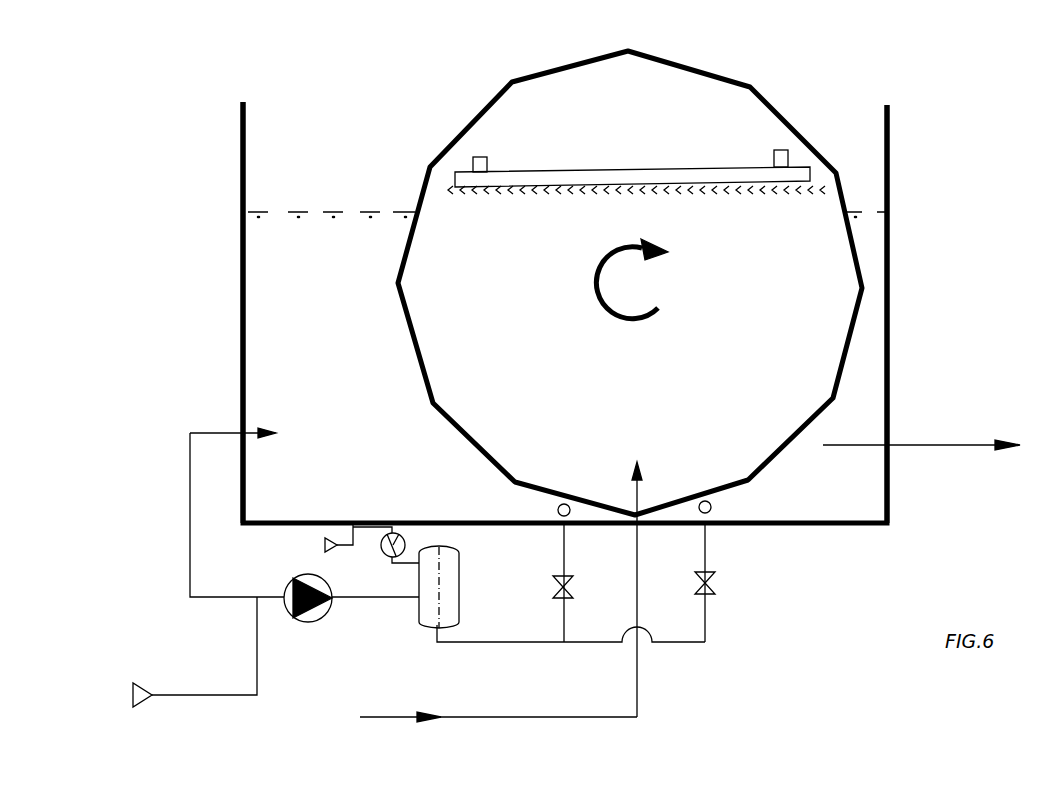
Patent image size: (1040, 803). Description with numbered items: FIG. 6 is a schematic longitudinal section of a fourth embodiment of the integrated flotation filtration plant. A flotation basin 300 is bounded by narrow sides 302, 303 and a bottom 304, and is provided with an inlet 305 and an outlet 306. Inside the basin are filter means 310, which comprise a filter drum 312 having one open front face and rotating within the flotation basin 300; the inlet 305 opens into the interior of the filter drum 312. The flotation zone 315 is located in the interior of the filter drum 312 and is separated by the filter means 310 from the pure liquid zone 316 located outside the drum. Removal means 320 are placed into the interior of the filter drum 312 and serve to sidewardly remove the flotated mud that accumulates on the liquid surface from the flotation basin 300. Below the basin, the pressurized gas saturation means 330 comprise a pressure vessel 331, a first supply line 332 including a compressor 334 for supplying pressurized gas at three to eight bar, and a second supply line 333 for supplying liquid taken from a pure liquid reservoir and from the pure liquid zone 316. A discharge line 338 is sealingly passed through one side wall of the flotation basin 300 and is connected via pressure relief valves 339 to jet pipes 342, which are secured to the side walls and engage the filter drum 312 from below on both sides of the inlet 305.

The flotation basin 300 is at (352, 143).
The narrow side 302 is at (242, 260).
The narrow side 303 is at (887, 150).
The bottom 304 is at (352, 522).
The inlet 305 is at (638, 685).
The outlet 306 is at (962, 443).
The filter means 310 is at (630, 258).
The filter drum 312 is at (785, 113).
The flotation zone 315 is at (569, 301).
The pure liquid zone 316 is at (567, 270).
The removal means 320 is at (572, 172).
The pressurized gas saturation means 330 is at (456, 567).
The pressure vessel 331 is at (455, 568).
The first supply line 332 is at (323, 538).
The second supply line 333 is at (382, 597).
The compressor 334 is at (382, 549).
The discharge line 338 is at (520, 643).
The pressure relief valves 339 is at (693, 580).
The jet pipes 342 is at (743, 505).